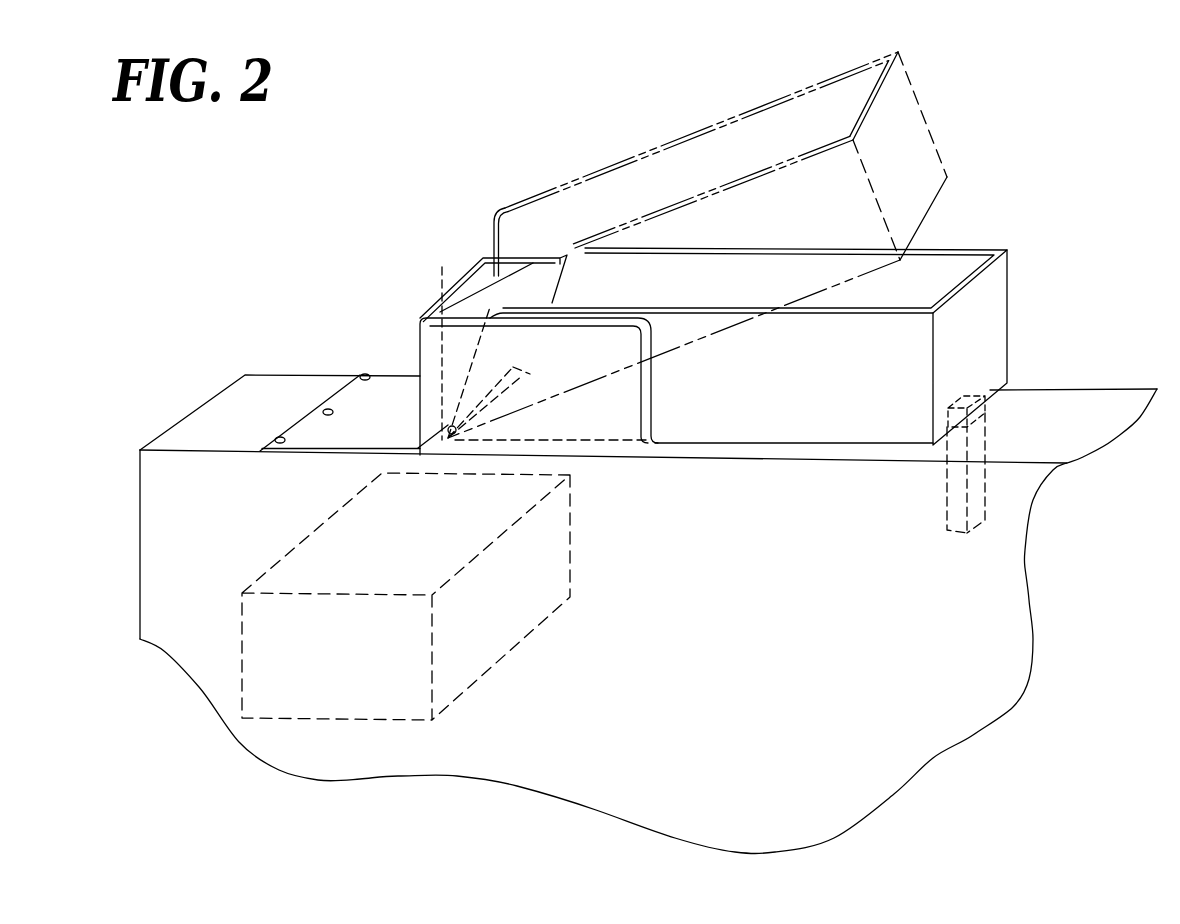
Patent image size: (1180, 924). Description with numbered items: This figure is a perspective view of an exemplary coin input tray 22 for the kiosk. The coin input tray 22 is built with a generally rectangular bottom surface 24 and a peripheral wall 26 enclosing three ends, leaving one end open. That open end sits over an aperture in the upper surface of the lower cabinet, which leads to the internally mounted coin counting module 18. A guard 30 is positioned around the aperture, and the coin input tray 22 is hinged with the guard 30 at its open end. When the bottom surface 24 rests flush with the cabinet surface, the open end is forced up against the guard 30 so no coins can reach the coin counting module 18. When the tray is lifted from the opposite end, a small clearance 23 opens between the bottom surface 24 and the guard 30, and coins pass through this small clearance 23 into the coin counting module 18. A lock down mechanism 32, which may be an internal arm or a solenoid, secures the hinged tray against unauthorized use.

The coin counting module 18 is at (527, 642).
The coin input tray 22 is at (415, 236).
The small clearance 23 is at (513, 367).
The bottom surface 24 is at (742, 443).
The peripheral wall 26 is at (995, 297).
The guard 30 is at (388, 393).
The lock down mechanism 32 is at (980, 413).